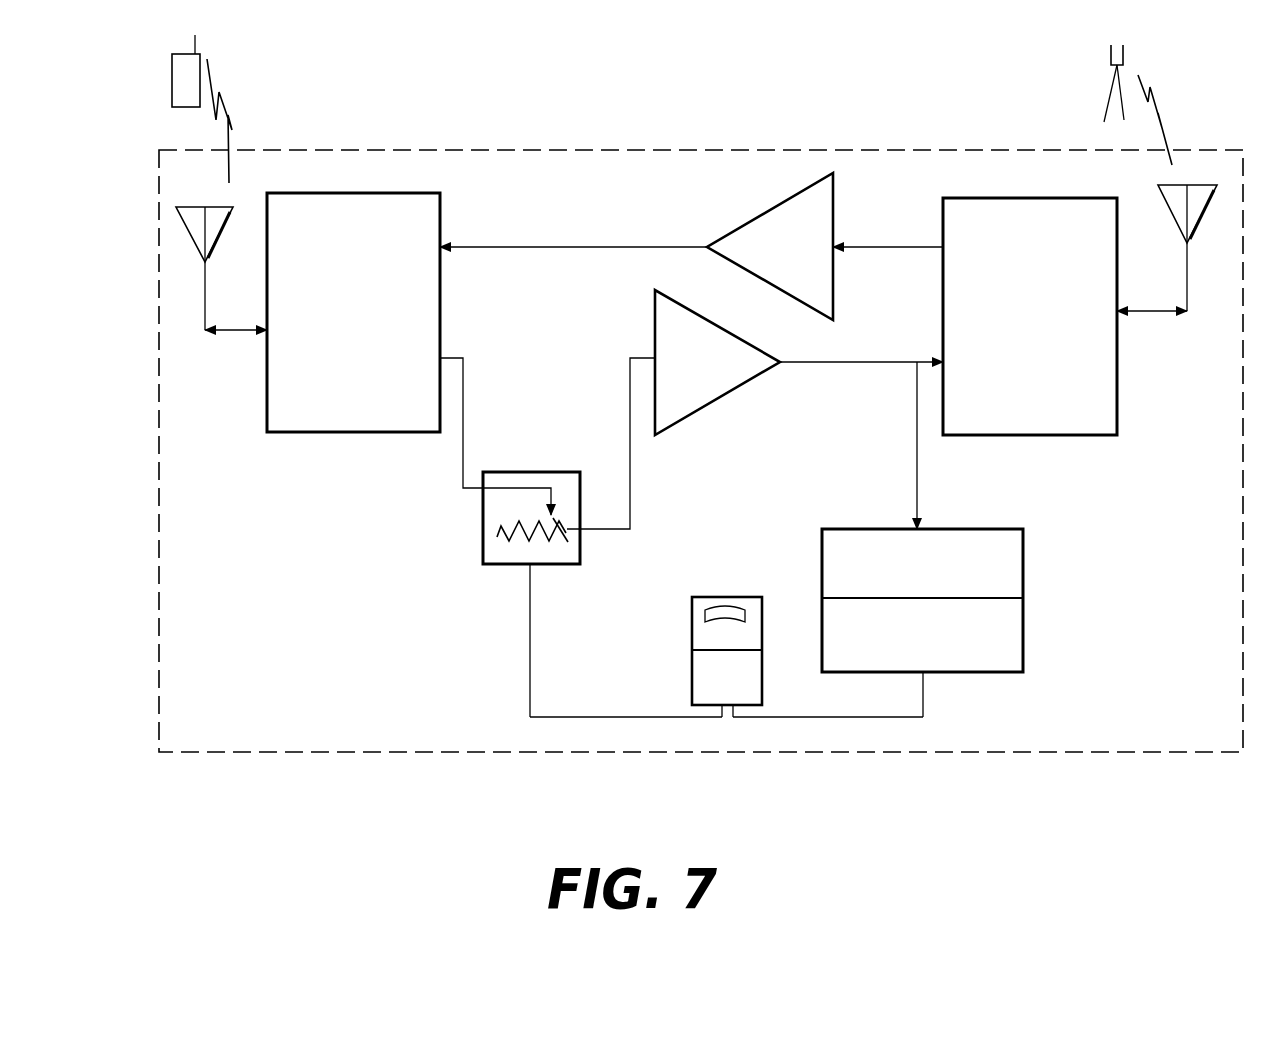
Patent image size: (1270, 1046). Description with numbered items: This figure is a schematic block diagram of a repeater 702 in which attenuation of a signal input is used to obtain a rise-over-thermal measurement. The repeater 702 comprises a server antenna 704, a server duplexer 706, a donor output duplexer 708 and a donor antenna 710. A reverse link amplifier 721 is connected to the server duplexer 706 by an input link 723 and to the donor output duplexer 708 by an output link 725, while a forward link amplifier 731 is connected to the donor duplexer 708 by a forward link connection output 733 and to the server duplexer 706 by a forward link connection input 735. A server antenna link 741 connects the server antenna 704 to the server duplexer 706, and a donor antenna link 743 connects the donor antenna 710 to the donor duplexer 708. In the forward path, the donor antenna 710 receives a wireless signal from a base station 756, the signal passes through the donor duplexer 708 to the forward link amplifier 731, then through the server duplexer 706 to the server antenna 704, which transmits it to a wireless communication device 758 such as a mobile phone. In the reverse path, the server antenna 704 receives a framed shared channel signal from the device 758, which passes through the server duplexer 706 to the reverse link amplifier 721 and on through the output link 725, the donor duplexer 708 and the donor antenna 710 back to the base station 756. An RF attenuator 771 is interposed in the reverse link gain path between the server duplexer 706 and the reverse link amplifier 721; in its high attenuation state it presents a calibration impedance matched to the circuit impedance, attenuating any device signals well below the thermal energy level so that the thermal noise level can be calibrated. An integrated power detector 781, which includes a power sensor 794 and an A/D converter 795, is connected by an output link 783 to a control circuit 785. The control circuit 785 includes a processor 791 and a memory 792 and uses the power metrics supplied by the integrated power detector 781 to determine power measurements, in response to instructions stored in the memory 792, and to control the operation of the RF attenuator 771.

The repeater 702 is at (937, 752).
The server antenna 704 is at (205, 300).
The server duplexer 706 is at (370, 192).
The donor output duplexer 708 is at (1033, 197).
The donor antenna 710 is at (1187, 268).
The reverse link amplifier 721 is at (738, 392).
The input link 723 is at (630, 358).
The output link 725 is at (828, 362).
The forward link amplifier 731 is at (766, 204).
The forward link connection output 733 is at (890, 247).
The forward link connection input 735 is at (628, 247).
The server antenna link 741 is at (247, 333).
The donor antenna link 743 is at (1145, 313).
The base station 756 is at (1112, 93).
The wireless communication device 758 is at (182, 108).
The RF attenuator 771 is at (548, 472).
The integrated power detector 781 is at (998, 528).
The output link 783 is at (925, 688).
The control circuit 785 is at (765, 684).
The processor 791 is at (762, 668).
The memory 792 is at (762, 615).
The power sensor 794 is at (1023, 560).
The A/D converter 795 is at (1023, 627).